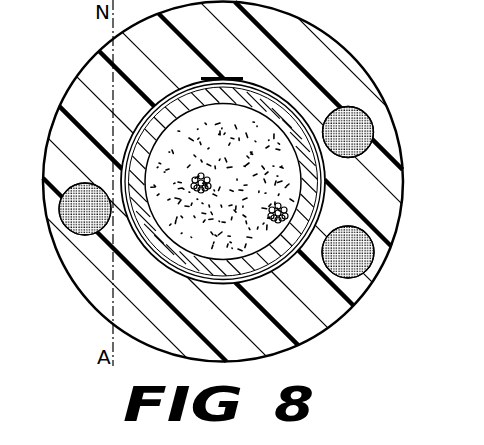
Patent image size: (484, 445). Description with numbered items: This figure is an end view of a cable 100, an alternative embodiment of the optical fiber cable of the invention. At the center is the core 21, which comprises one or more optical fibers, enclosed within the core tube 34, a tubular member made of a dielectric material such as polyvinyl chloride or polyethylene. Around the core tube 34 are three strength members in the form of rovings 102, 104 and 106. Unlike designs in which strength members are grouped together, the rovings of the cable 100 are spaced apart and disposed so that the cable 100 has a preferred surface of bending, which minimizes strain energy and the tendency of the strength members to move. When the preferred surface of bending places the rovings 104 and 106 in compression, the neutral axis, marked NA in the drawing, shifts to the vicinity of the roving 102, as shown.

The cable 100 is at (336, 26).
The roving 102 is at (68, 230).
The roving 104 is at (364, 128).
The roving 106 is at (360, 263).
The core 21 is at (172, 100).
The core tube 34 is at (233, 77).